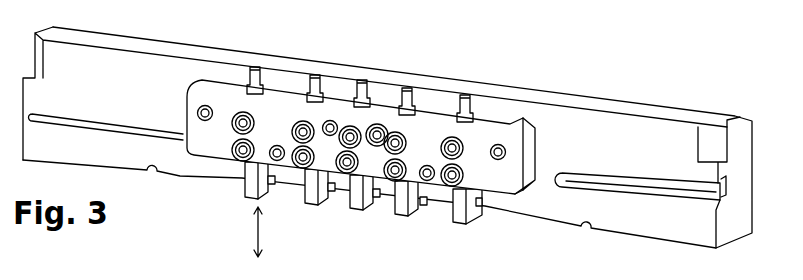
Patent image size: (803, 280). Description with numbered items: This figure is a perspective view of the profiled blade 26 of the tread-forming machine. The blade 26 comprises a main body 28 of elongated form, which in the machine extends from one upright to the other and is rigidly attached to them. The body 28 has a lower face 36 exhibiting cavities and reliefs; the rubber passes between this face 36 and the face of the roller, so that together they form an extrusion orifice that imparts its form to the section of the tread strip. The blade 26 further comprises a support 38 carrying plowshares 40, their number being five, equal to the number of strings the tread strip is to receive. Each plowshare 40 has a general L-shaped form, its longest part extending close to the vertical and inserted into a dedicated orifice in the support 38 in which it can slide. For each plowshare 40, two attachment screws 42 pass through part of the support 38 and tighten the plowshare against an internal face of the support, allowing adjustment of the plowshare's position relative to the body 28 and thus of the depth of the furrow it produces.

The profiled blade 26 is at (402, 142).
The main body 28 is at (618, 127).
The lower face 36 is at (530, 218).
The support 38 is at (227, 106).
The plowshares 40 is at (245, 188).
The attachment screws 42 is at (467, 146).